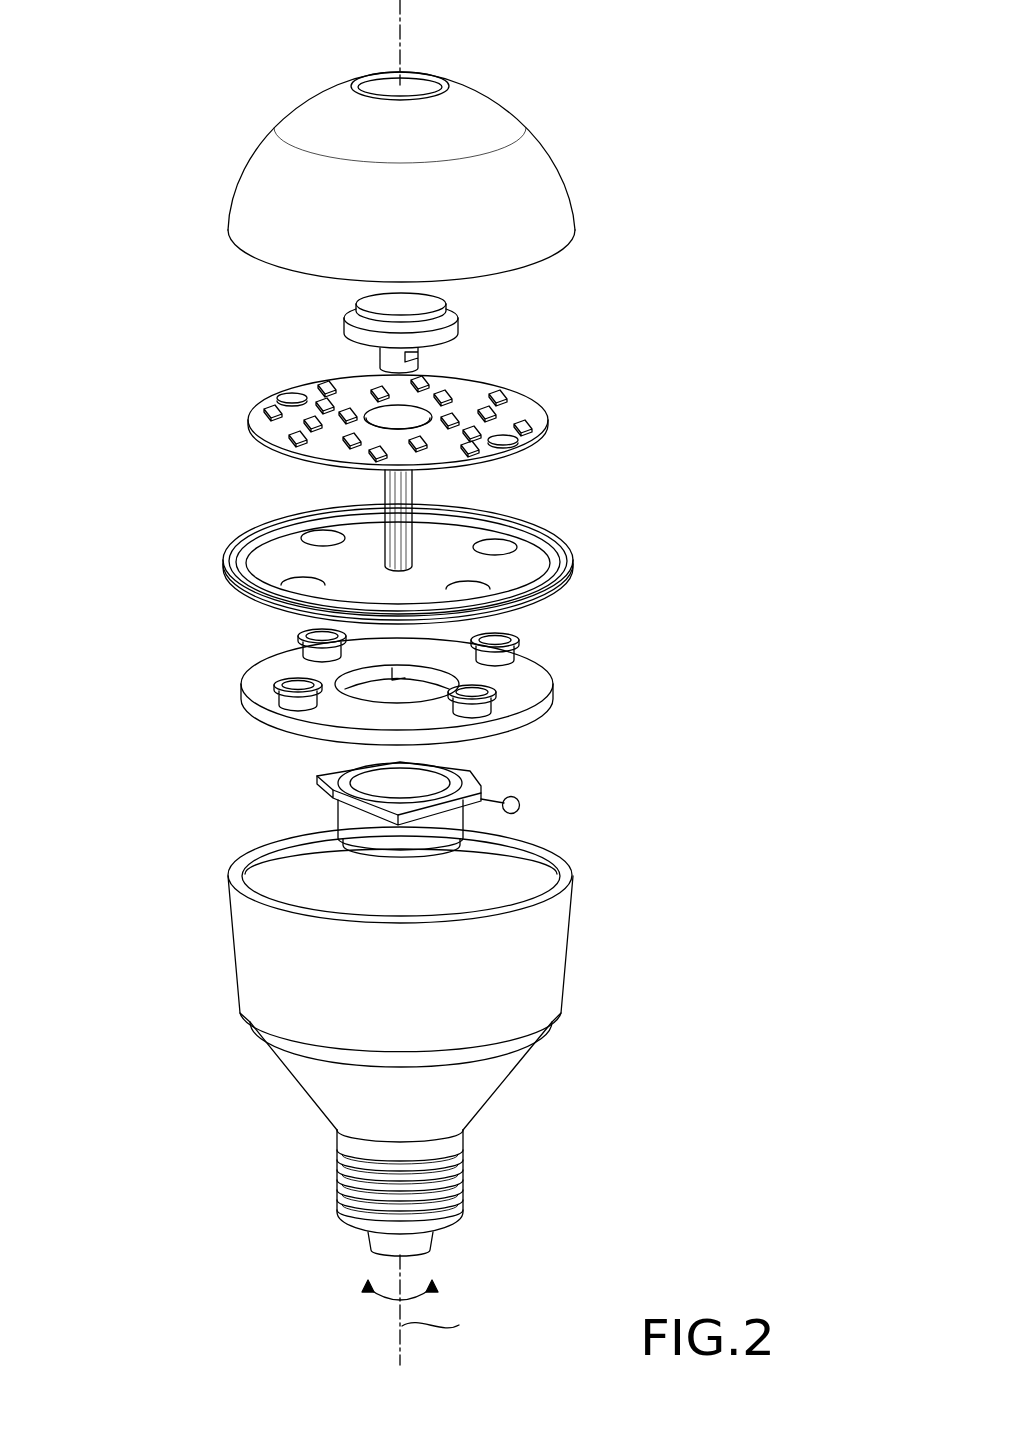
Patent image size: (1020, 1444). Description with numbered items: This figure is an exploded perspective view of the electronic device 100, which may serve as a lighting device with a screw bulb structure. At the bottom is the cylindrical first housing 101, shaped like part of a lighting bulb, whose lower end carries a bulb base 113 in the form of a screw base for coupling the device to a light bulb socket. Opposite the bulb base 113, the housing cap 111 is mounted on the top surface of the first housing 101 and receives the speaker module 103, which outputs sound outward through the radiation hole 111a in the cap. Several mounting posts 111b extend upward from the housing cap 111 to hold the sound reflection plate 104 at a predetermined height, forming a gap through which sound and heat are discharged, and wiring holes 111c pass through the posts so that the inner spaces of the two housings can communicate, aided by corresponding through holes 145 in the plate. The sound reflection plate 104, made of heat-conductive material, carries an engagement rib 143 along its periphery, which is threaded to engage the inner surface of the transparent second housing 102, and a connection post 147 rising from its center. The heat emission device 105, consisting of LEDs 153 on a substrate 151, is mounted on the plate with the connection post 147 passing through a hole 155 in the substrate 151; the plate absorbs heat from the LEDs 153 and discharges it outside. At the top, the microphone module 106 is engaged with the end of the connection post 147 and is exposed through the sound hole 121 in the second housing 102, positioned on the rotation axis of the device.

The electronic device 100 is at (588, 75).
The first housing 101 is at (590, 931).
The second housing 102 is at (224, 178).
The speaker module 103 is at (540, 801).
The sound reflection plate 104 is at (211, 568).
The heat emission device 105 is at (236, 417).
The microphone module 106 is at (470, 321).
The housing cap 111 is at (552, 688).
The radiation hole 111a is at (378, 694).
The mounting post 111b is at (300, 634).
The wiring hole 111c is at (292, 683).
The bulb base 113 is at (468, 1172).
The sound hole 121 is at (417, 88).
The engagement rib 143 is at (252, 537).
The through hole 145 is at (496, 545).
The connection post 147 is at (412, 486).
The substrate 151 is at (537, 413).
The LED 153 is at (327, 386).
The hole 155 is at (390, 417).